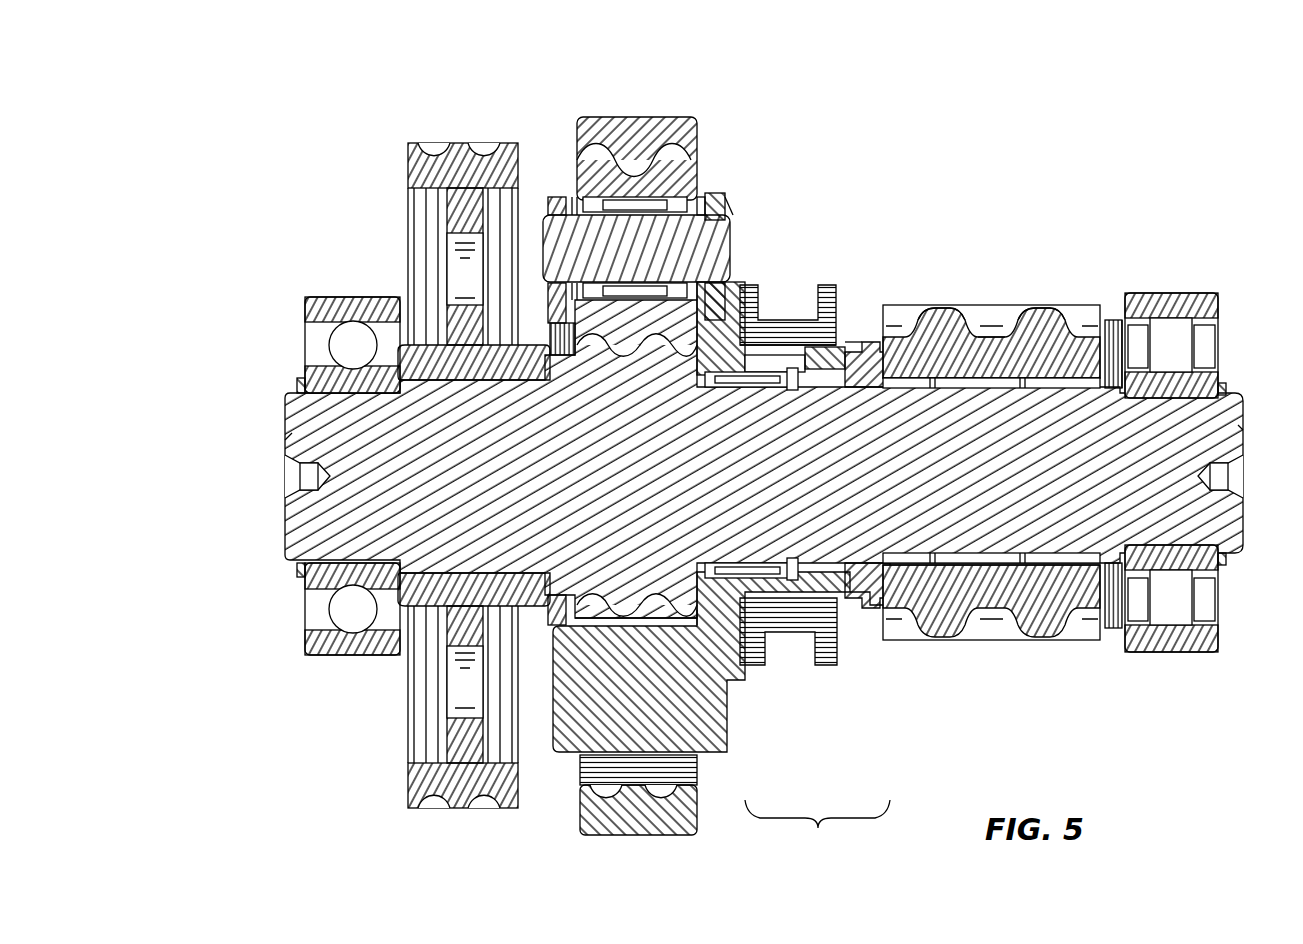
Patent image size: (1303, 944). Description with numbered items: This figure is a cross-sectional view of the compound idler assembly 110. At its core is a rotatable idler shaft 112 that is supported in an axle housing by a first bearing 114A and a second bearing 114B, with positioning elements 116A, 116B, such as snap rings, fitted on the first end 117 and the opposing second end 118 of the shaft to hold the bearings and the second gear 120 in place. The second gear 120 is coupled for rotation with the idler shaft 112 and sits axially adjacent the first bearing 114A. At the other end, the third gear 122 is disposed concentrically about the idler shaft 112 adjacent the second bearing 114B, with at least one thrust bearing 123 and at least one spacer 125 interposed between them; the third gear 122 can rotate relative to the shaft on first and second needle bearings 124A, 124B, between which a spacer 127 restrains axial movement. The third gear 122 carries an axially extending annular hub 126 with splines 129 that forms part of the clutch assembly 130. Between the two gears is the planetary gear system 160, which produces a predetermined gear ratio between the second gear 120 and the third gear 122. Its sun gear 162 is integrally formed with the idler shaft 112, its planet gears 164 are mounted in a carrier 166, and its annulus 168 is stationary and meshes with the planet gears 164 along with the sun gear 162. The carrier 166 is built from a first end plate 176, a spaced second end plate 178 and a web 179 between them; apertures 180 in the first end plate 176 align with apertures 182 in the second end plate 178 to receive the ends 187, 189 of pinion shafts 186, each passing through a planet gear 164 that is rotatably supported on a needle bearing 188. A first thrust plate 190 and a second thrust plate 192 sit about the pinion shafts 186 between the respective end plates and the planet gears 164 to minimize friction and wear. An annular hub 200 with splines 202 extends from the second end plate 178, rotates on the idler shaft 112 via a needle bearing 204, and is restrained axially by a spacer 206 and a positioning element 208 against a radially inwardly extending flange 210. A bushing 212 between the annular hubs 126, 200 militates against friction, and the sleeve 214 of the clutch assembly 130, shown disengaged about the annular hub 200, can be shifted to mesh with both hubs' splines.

The compound idler assembly 110 is at (195, 158).
The idler shaft 112 is at (280, 391).
The first bearing 114A is at (320, 300).
The second bearing 114B is at (1200, 293).
The positioning element 116A is at (300, 378).
The positioning element 116B is at (1224, 383).
The first end 117 is at (285, 430).
The second end 118 is at (1243, 425).
The second gear 120 is at (440, 143).
The third gear 122 is at (977, 335).
The thrust bearing 123 is at (1110, 320).
The first needle bearing 124A is at (928, 348).
The second needle bearing 124B is at (1038, 348).
The spacer 125 is at (1121, 330).
The annular hub 126 is at (882, 350).
The spacer 127 is at (998, 355).
The splines 129 is at (864, 344).
The clutch assembly 130 is at (817, 835).
The planetary gear system 160 is at (605, 112).
The sun gear 162 is at (687, 623).
The planet gears 164 is at (590, 197).
The carrier 166 is at (725, 205).
The annulus 168 is at (638, 200).
The first end plate 176 is at (550, 200).
The second end plate 178 is at (716, 188).
The web 179 is at (717, 747).
The apertures 180 is at (565, 205).
The apertures 182 is at (728, 212).
The pinion shafts 186 is at (657, 200).
The end of pinion shaft 187 is at (545, 243).
The needle bearing 188 is at (672, 160).
The end of pinion shaft 189 is at (732, 228).
The first thrust plate 190 is at (573, 197).
The second thrust plate 192 is at (701, 197).
The annular hub 200 is at (752, 382).
The splines 202 is at (802, 320).
The needle bearing 204 is at (770, 355).
The spacer 206 is at (792, 385).
The positioning element 208 is at (798, 598).
The flange 210 is at (855, 605).
The bushing 212 is at (840, 347).
The sleeve 214 is at (828, 285).